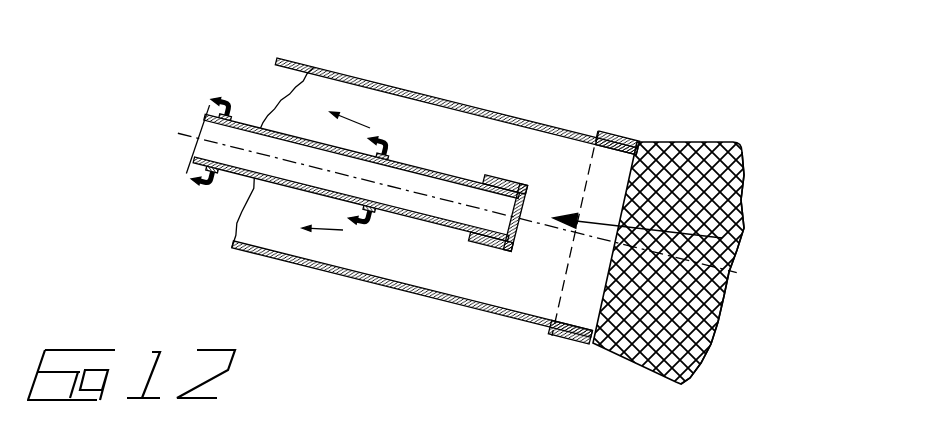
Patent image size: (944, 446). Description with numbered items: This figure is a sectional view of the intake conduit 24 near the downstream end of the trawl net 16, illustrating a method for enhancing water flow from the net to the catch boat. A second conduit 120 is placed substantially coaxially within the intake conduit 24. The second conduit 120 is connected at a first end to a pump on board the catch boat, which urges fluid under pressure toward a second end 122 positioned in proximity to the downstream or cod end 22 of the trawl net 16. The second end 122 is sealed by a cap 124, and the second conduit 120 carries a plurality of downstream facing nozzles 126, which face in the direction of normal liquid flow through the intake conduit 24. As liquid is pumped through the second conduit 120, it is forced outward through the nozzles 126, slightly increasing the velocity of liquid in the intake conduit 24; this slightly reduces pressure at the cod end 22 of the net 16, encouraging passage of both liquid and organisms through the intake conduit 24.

The trawl net 16 is at (733, 207).
The cod end 22 is at (693, 165).
The intake conduit 24 is at (315, 60).
The second conduit 120 is at (208, 121).
The second end 122 is at (457, 192).
The cap 124 is at (523, 197).
The downstream facing nozzles 126 is at (208, 192).